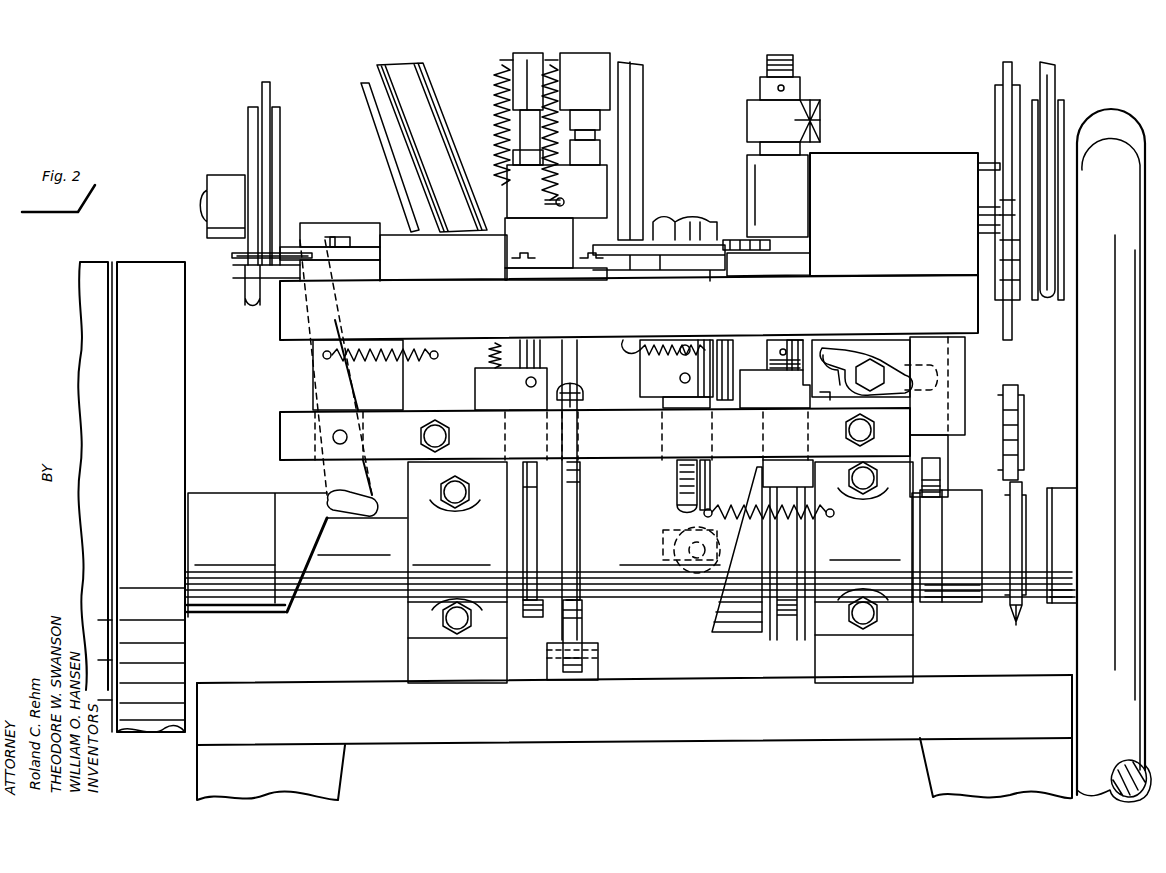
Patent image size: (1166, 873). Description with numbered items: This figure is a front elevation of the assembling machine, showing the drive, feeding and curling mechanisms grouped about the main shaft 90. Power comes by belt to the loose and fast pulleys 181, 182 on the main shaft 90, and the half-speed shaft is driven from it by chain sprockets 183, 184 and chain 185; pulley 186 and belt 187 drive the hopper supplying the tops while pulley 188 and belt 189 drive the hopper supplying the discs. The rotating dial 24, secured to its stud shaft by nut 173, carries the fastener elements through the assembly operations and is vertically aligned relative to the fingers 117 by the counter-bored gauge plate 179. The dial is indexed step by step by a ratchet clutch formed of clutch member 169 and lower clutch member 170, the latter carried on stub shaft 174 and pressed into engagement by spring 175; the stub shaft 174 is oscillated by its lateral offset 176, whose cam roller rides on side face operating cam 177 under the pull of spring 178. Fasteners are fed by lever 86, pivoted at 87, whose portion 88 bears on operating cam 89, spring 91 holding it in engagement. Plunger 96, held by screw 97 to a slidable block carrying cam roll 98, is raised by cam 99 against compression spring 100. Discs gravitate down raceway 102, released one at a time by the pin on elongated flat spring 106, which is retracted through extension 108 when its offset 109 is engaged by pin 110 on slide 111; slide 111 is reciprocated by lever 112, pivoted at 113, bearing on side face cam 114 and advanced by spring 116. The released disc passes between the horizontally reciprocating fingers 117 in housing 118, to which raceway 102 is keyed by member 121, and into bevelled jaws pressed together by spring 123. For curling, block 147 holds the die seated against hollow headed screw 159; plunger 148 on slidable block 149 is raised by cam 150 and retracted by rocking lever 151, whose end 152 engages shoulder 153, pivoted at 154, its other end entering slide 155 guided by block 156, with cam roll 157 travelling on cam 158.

The rotating dial 24 is at (722, 240).
The lever 86 is at (580, 367).
The pivot 87 is at (598, 655).
The portion of lever 88 is at (581, 473).
The operating cam 89 is at (545, 612).
The main shaft 90 is at (377, 588).
The spring 91 is at (583, 392).
The plunger 96 is at (540, 354).
The screw 97 is at (528, 385).
The cam roll 98 is at (524, 482).
The cam 99 is at (536, 618).
The compression spring 100 is at (486, 349).
The raceway 102 is at (443, 112).
The elongated flat spring 106 is at (368, 125).
The extension 108 is at (340, 235).
The offset 109 is at (312, 233).
The pin 110 is at (338, 240).
The slide 111 is at (242, 276).
The lever 112 is at (315, 378).
The pivot 113 is at (348, 437).
The side face cam 114 is at (290, 606).
The spring 116 is at (380, 360).
The horizontally reciprocating fingers 117 is at (381, 253).
The housing 118 is at (486, 272).
The member 121 is at (493, 230).
The spring 123 is at (238, 257).
The block 147 is at (903, 153).
The plunger 148 is at (808, 343).
The slidable block 149 is at (752, 378).
The cam 150 is at (789, 616).
The rocking lever 151 is at (855, 348).
The lever end 152 is at (828, 372).
The shoulder 153 is at (830, 395).
The pivot 154 is at (874, 370).
The slide 155 is at (948, 452).
The block 156 is at (960, 392).
The cam roll 157 is at (938, 476).
The cam 158 is at (936, 603).
The hollow headed screw 159 is at (812, 110).
The clutch member 169 is at (735, 345).
The lower clutch member 170 is at (623, 340).
The nut 173 is at (663, 222).
The stub shaft 174 is at (712, 474).
The spring 175 is at (676, 472).
The lateral offset 176 is at (673, 570).
The side face operating cam 177 is at (742, 632).
The spring 178 is at (808, 522).
The counter-bored gauge plate 179 is at (800, 268).
The loose pulley 181 is at (78, 308).
The fast pulley 182 is at (150, 262).
The chain sprocket 183 is at (1015, 620).
The chain sprocket 184 is at (1014, 326).
The chain 185 is at (1022, 456).
The pulley 186 is at (1060, 115).
The belt 187 is at (1050, 80).
The pulley 188 is at (270, 140).
The belt 189 is at (266, 98).